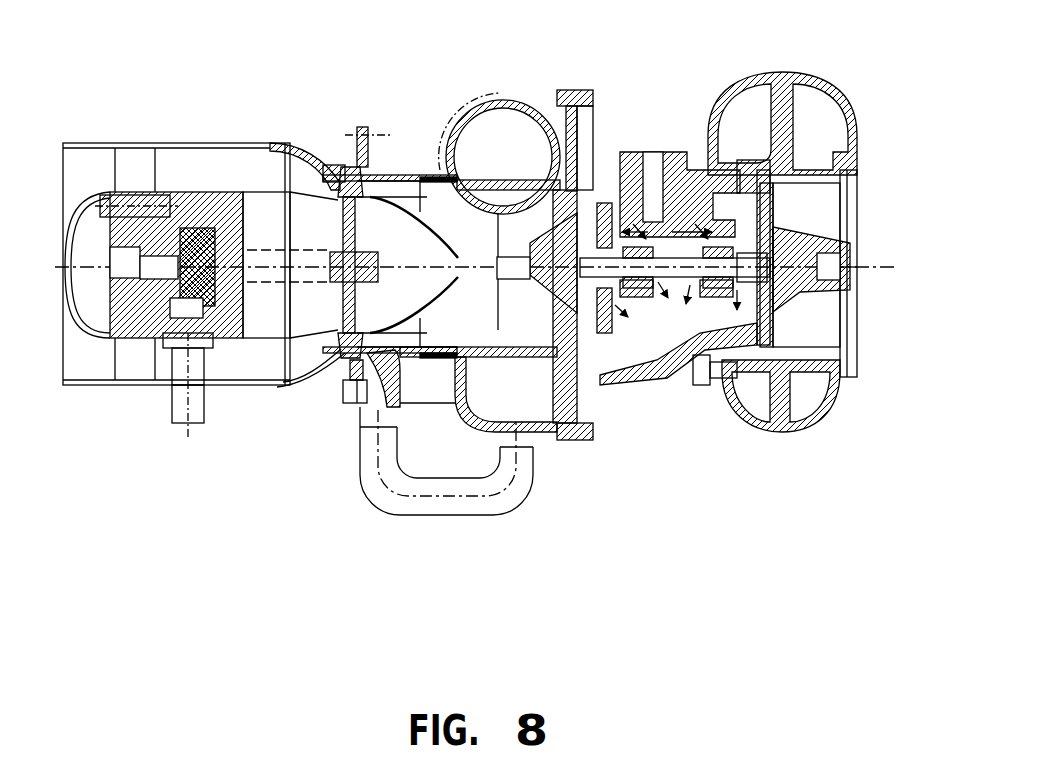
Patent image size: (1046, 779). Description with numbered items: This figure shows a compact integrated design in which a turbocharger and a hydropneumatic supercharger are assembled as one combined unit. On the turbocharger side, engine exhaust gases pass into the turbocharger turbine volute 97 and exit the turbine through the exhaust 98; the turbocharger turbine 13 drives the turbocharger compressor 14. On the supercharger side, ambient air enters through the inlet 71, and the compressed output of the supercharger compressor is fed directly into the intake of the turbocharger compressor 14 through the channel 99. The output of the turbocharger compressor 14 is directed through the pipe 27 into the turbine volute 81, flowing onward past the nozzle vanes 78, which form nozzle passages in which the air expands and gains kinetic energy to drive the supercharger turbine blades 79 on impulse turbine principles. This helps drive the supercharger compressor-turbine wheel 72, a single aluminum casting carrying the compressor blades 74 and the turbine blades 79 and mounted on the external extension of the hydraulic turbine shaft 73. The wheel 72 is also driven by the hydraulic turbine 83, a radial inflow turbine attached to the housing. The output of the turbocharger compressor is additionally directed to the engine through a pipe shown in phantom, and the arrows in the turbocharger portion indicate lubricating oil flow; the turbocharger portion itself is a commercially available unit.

The turbocharger turbine 13 is at (800, 320).
The turbocharger compressor 14 is at (583, 340).
The pipe 27 is at (477, 500).
The inlet pipe 71 is at (93, 157).
The supercharger compressor-turbine wheel 72 is at (350, 300).
The hydraulic turbine shaft 73 is at (327, 275).
The compressor blades 74 is at (350, 340).
The nozzle vanes 78 is at (350, 350).
The turbine blades 79 is at (372, 162).
The turbine volute 81 is at (382, 378).
The hydraulic turbine 83 is at (205, 187).
The turbocharger turbine volute 97 is at (803, 115).
The exhaust 98 is at (851, 214).
The channel 99 is at (480, 233).